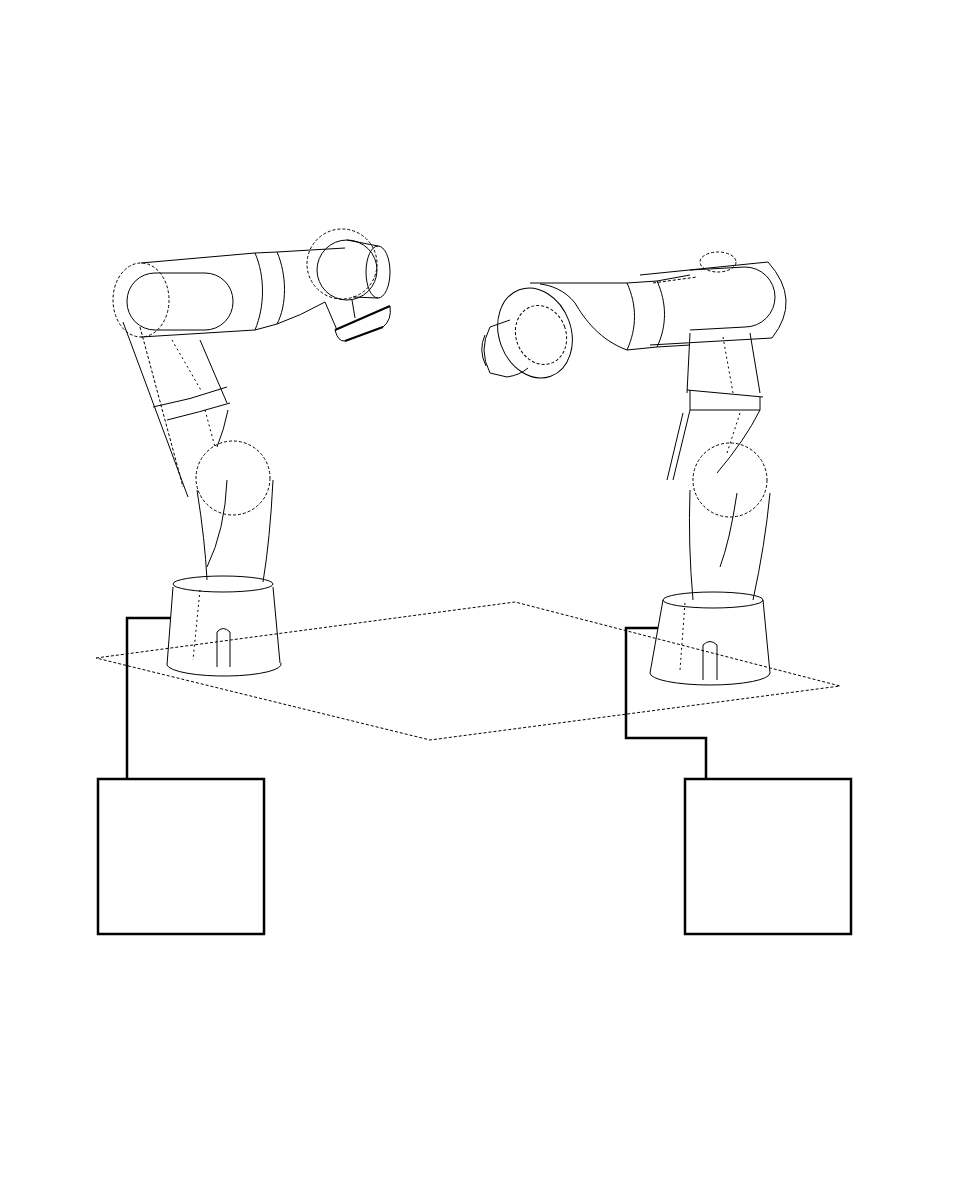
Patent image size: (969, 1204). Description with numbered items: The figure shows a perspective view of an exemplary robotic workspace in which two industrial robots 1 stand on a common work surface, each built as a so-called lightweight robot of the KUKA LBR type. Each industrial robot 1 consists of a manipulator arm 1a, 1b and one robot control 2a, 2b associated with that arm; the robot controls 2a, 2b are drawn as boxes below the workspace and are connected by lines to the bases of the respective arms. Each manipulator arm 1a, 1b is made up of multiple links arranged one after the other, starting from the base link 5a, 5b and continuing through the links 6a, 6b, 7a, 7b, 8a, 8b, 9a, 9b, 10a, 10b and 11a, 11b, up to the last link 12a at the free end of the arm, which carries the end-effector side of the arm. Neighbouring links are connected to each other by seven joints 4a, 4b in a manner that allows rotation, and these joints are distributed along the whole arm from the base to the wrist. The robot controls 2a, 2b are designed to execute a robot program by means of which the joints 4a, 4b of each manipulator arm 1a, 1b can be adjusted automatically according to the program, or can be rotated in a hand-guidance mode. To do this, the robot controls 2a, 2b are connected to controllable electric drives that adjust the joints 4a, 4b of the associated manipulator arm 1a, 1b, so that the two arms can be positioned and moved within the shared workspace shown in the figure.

The industrial robot 1 is at (455, 536).
The manipulator arm 1a is at (208, 128).
The manipulator arm 1b is at (633, 115).
The robot control 2a is at (244, 875).
The robot control 2b is at (694, 869).
The joints 4a is at (127, 287).
The joints 4b is at (485, 333).
The link 5a is at (243, 633).
The link 5b is at (660, 625).
The link 6a is at (257, 510).
The link 6b is at (743, 533).
The link 7a is at (217, 427).
The link 7b is at (683, 443).
The link 8a is at (167, 377).
The link 8b is at (733, 367).
The link 9a is at (190, 297).
The link 9b is at (690, 303).
The link 10a is at (302, 273).
The link 10b is at (597, 300).
The link 11a is at (333, 307).
The link 11b is at (533, 343).
The link 12a is at (367, 337).